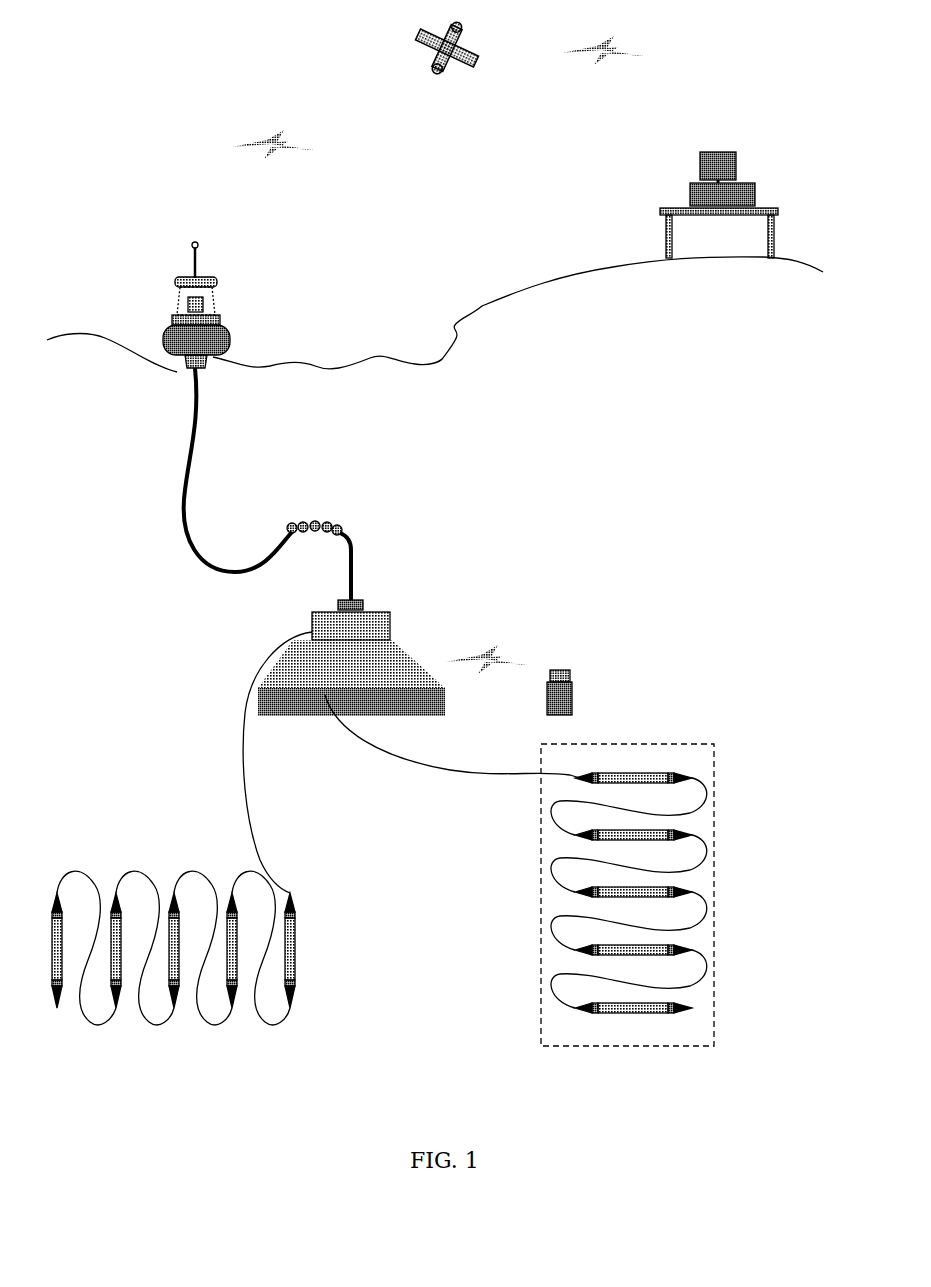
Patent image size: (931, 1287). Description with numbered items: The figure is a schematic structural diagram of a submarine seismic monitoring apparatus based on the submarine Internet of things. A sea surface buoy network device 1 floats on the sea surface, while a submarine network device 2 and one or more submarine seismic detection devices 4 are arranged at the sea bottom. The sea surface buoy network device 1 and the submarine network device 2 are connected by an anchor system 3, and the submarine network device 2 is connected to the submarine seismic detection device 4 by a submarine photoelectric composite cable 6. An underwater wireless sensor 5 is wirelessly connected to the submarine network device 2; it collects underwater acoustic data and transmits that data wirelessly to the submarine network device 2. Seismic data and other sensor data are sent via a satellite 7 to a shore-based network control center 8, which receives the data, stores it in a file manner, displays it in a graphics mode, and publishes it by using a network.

The sea surface buoy network device 1 is at (213, 310).
The submarine network device 2 is at (388, 647).
The anchor system 3 is at (207, 543).
The submarine seismic detection device 4 is at (693, 745).
The underwater wireless sensor 5 is at (575, 688).
The submarine photoelectric composite cable 6 is at (402, 752).
The satellite 7 is at (460, 52).
The shore-based network control center 8 is at (745, 183).